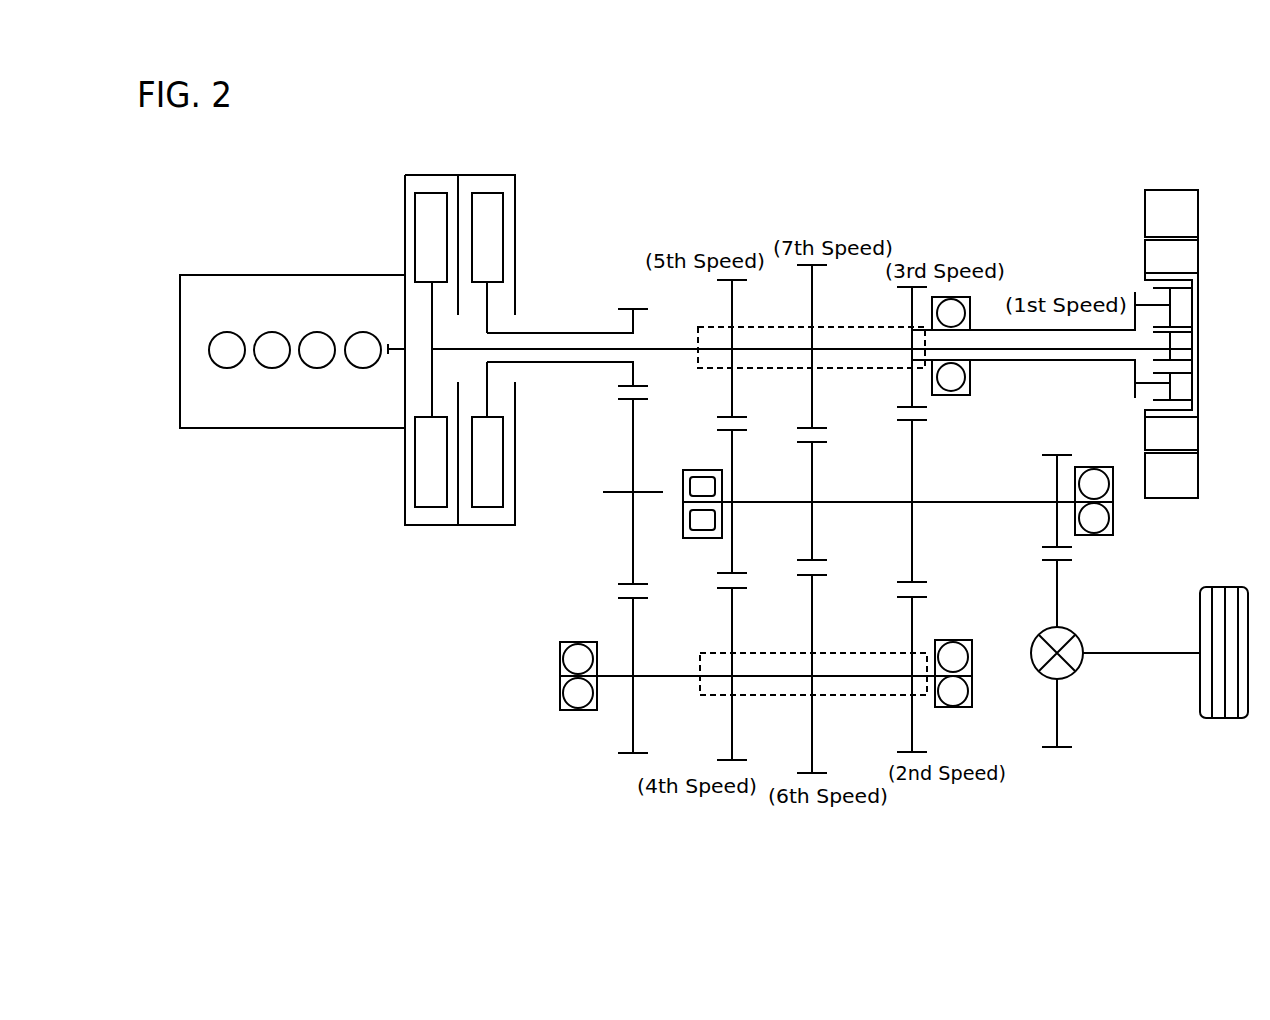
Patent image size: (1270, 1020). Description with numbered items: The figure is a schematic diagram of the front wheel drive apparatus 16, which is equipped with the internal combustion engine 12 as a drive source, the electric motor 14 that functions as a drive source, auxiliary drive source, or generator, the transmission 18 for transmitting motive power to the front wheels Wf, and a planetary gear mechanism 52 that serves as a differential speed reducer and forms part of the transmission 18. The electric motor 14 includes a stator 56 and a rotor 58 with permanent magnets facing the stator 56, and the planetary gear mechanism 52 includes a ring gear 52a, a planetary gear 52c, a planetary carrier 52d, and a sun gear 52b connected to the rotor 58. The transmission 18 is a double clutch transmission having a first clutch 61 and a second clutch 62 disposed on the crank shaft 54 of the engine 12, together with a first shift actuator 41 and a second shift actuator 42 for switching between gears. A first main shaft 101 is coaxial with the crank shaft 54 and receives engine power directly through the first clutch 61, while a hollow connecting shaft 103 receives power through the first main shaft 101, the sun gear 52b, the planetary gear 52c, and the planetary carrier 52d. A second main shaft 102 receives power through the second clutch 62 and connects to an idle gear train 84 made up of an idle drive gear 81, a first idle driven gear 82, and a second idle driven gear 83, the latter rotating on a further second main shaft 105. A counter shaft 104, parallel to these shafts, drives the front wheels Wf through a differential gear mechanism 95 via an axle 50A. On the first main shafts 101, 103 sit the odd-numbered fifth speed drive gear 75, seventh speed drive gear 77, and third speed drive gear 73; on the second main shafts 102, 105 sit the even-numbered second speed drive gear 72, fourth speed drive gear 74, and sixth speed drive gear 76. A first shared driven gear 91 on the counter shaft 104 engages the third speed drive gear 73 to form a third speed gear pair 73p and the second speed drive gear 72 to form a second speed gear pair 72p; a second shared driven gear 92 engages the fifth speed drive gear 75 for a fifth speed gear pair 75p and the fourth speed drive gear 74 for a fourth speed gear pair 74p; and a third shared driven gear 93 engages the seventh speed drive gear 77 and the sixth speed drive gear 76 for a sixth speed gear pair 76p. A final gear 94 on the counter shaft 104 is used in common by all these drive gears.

The internal combustion engine 12 is at (245, 430).
The electric motor 14 is at (1181, 327).
The front wheel drive apparatus 16 is at (338, 153).
The transmission 18 is at (776, 208).
The first shift actuator 41 is at (830, 326).
The second shift actuator 42 is at (781, 652).
The axle 50A is at (1117, 655).
The planetary gear mechanism 52 is at (1181, 314).
The ring gear 52a is at (1185, 422).
The sun gear 52b is at (1183, 337).
The planetary gear 52c is at (1183, 378).
The planetary carrier 52d is at (1180, 306).
The crank shaft 54 is at (392, 352).
The stator 56 is at (1185, 223).
The rotor 58 is at (1180, 265).
The first clutch 61 is at (428, 190).
The second clutch 62 is at (484, 190).
The second speed drive gear 72 is at (920, 750).
The second speed gear pair 72p is at (935, 581).
The third speed drive gear 73 is at (897, 290).
The third speed gear pair 73p is at (897, 406).
The fourth speed drive gear 74 is at (744, 758).
The fourth speed gear pair 74p is at (723, 599).
The fifth speed drive gear 75 is at (727, 283).
The fifth speed gear pair 75p is at (723, 416).
The sixth speed drive gear 76 is at (820, 772).
The sixth speed gear pair 76p is at (840, 577).
The seventh speed drive gear 77 is at (805, 268).
The idle drive gear 81 is at (628, 387).
The first idle driven gear 82 is at (625, 583).
The second idle driven gear 83 is at (625, 600).
The idle gear train 84 is at (604, 514).
The first shared driven gear 91 is at (920, 428).
The second shared driven gear 92 is at (738, 436).
The third shared driven gear 93 is at (822, 446).
The final gear 94 is at (1046, 460).
The differential gear mechanism 95 is at (1080, 620).
The first main shaft 101 is at (660, 347).
The second main shaft 102 is at (563, 332).
The hollow connecting shaft 103 is at (1000, 362).
The counter shaft 104 is at (834, 505).
The second main shaft 105 is at (668, 680).
The front wheels Wf is at (1213, 586).